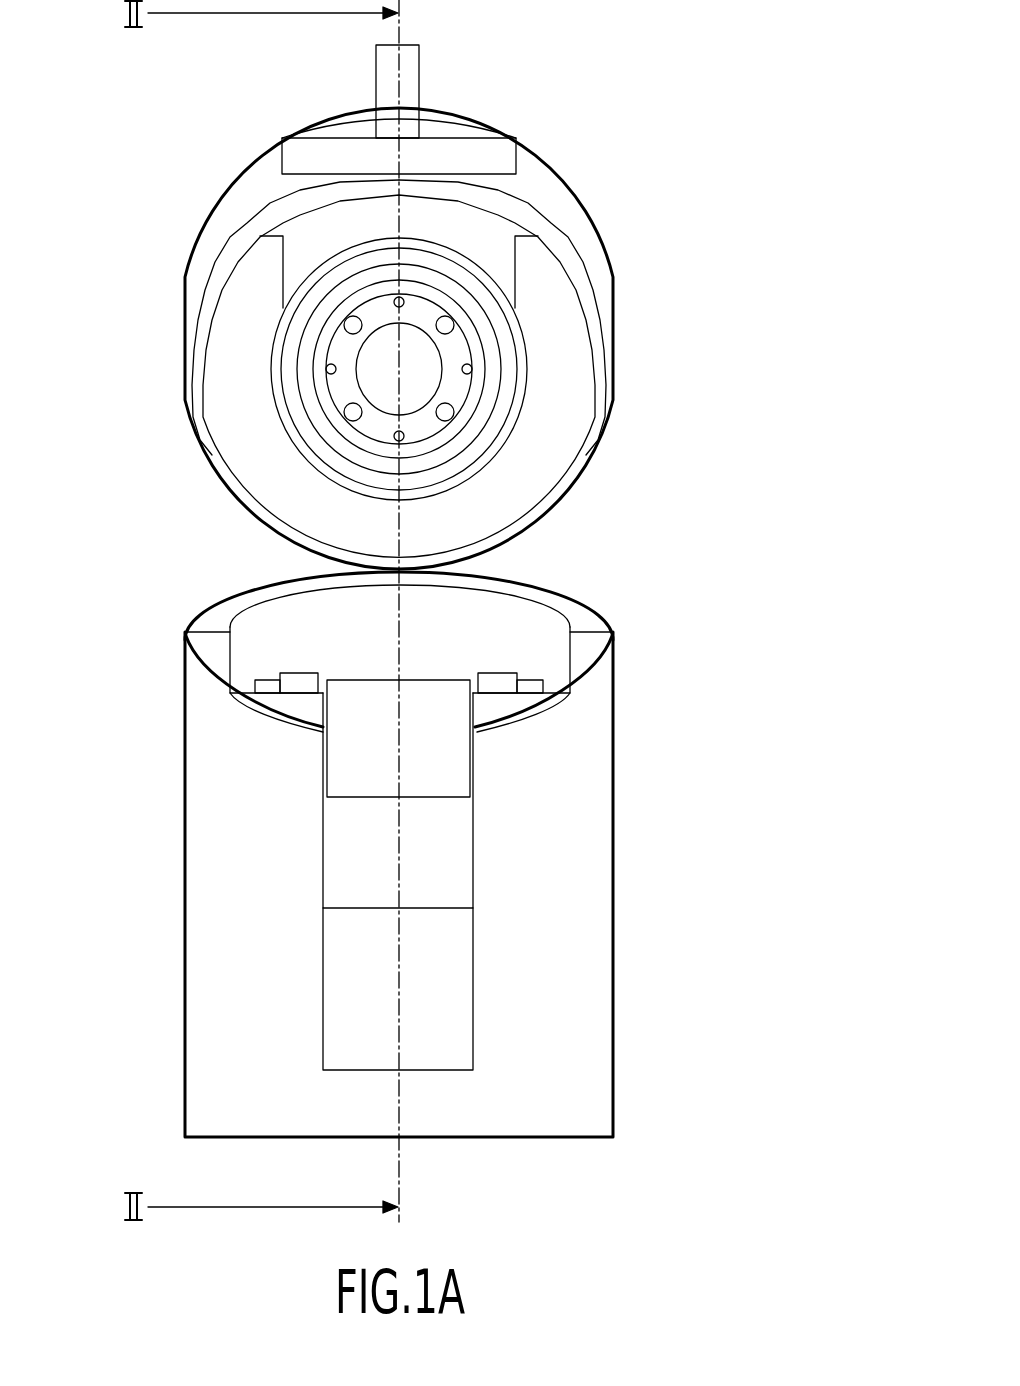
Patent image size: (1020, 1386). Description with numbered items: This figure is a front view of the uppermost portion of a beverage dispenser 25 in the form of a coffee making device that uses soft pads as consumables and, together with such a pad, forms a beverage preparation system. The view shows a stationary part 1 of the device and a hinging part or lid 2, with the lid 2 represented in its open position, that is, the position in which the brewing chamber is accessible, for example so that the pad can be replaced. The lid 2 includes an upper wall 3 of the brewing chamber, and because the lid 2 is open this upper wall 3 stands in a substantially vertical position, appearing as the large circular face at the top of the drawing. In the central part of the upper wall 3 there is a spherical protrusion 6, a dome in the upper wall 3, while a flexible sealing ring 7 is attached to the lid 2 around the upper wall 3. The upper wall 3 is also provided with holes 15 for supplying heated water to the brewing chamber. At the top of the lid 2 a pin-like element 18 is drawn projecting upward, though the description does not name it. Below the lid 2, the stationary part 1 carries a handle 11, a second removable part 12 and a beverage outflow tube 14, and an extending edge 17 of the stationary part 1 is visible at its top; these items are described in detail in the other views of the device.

The stationary part 1 is at (202, 1012).
The hinging part 2 is at (215, 372).
The upper wall 3 is at (462, 347).
The spherical protrusion 6 is at (412, 395).
The flexible sealing ring 7 is at (335, 460).
The handle 11 is at (448, 757).
The second removable part 12 is at (345, 855).
The beverage outflow tube 14 is at (450, 1013).
The holes 15 is at (350, 327).
The extending edge 17 is at (297, 680).
The pin 18 is at (410, 58).
The beverage dispenser 25 is at (632, 88).